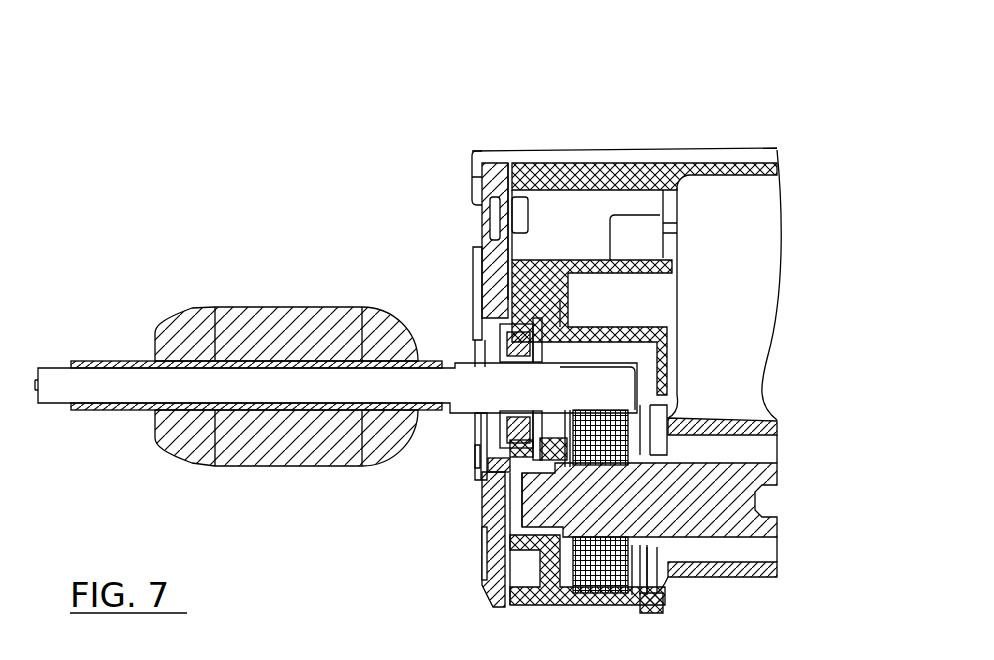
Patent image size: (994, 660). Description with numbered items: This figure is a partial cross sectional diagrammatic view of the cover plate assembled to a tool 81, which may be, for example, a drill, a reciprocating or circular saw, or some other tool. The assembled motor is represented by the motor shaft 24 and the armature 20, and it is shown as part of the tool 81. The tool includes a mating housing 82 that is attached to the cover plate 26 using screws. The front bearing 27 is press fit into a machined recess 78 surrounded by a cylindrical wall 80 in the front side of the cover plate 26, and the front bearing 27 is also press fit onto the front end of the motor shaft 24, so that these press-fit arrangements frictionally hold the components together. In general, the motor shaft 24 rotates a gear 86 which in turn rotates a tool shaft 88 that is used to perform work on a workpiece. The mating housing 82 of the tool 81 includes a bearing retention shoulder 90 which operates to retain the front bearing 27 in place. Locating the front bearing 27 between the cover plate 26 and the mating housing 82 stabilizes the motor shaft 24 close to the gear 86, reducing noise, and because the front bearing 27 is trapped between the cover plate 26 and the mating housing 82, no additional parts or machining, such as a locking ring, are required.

The armature 20 is at (292, 330).
The motor shaft 24 is at (458, 395).
The cover plate 26 is at (481, 165).
The front bearing 27 is at (495, 436).
The machined recess 78 is at (500, 340).
The cylindrical wall 80 is at (472, 320).
The tool 81 is at (640, 97).
The mating housing 82 is at (660, 182).
The gear 86 is at (622, 430).
The tool shaft 88 is at (687, 495).
The bearing retention shoulder 90 is at (488, 313).